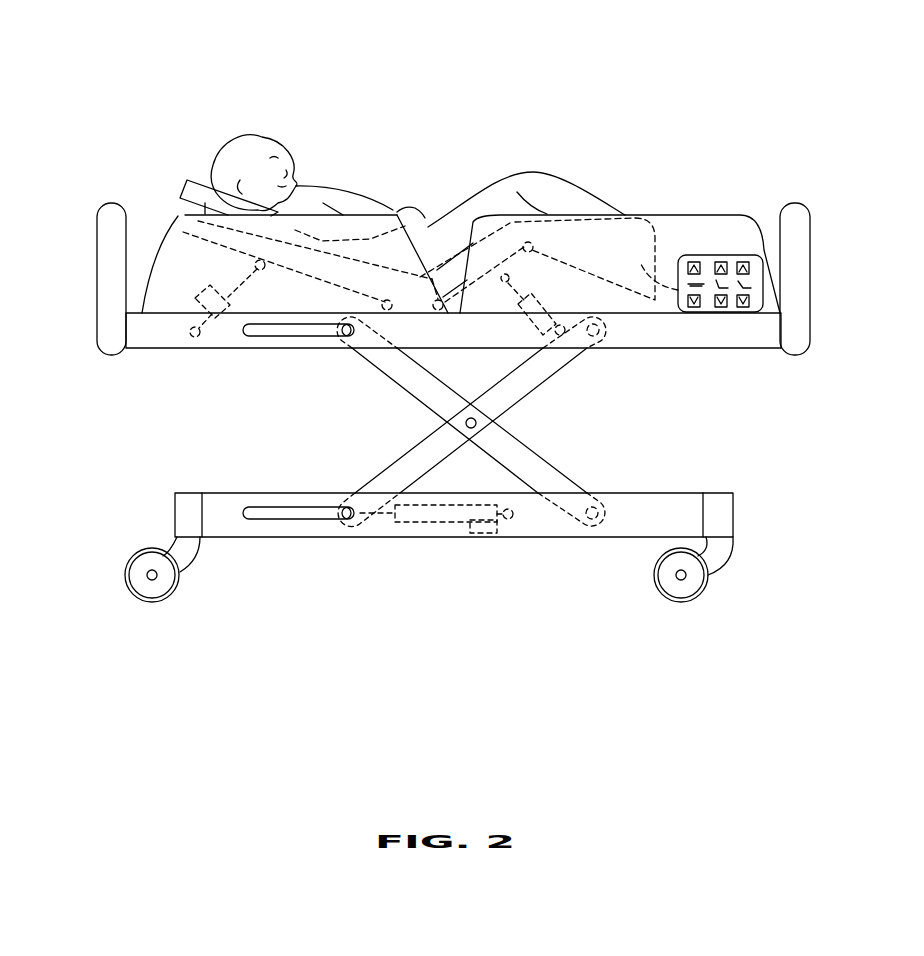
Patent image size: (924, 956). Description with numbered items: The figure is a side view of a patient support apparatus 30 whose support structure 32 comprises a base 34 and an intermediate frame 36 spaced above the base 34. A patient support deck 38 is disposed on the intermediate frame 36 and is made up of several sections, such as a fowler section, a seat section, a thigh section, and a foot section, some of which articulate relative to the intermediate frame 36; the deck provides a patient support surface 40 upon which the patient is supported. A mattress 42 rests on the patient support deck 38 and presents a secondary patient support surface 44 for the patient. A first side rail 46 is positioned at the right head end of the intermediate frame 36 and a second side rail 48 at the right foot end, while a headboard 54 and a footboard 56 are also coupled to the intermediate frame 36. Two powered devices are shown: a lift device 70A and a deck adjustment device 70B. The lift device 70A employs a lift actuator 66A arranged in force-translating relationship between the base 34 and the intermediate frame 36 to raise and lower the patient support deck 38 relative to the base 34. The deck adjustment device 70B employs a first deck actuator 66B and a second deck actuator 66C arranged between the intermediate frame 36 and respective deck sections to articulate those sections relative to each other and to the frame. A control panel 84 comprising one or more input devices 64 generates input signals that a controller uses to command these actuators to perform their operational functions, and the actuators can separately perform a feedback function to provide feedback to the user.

The patient support apparatus 30 is at (678, 62).
The support structure 32 is at (627, 404).
The base 34 is at (667, 492).
The intermediate frame 36 is at (702, 350).
The patient support deck 38 is at (186, 221).
The patient support surface 40 is at (228, 248).
The mattress 42 is at (188, 178).
The secondary patient support surface 44 is at (205, 214).
The first side rail 46 is at (316, 213).
The second side rail 48 is at (659, 215).
The headboard 54 is at (113, 290).
The footboard 56 is at (795, 242).
The input device 64 is at (736, 258).
The lift actuator 66A is at (493, 536).
The first deck actuator 66B is at (181, 303).
The second deck actuator 66C is at (564, 298).
The lift device 70A is at (423, 526).
The deck adjustment device 70B is at (218, 326).
The control panel 84 is at (769, 225).